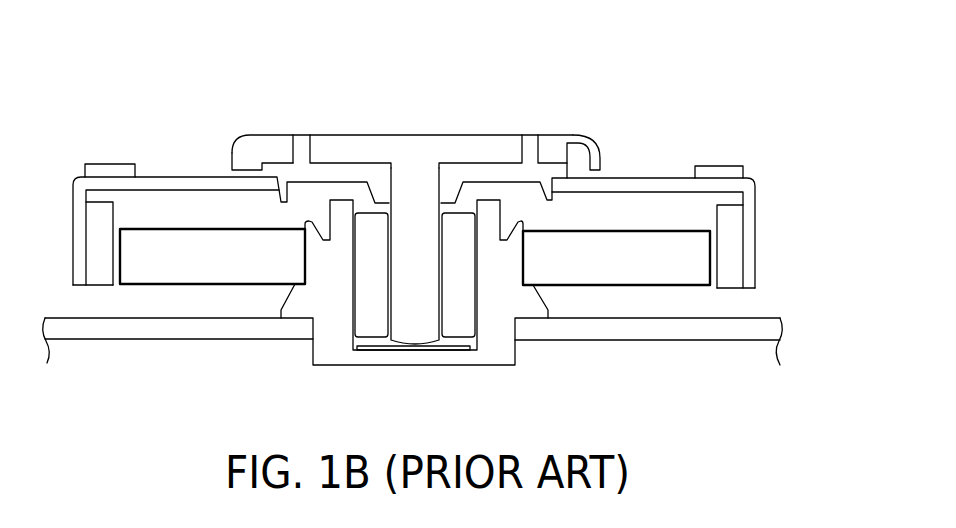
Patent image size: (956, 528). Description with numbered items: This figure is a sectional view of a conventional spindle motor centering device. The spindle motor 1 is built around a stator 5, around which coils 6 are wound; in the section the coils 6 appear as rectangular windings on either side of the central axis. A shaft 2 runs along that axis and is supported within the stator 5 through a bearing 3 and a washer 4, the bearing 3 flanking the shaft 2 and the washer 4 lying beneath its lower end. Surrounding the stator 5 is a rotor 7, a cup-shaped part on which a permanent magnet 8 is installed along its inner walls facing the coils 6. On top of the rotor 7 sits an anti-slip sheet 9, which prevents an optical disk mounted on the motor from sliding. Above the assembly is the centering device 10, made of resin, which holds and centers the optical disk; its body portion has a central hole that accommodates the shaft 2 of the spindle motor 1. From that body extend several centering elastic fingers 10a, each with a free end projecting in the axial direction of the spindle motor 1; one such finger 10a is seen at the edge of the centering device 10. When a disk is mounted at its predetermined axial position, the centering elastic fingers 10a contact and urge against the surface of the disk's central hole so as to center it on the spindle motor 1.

The spindle motor 1 is at (617, 79).
The shaft 2 is at (416, 167).
The bearing 3 is at (453, 337).
The washer 4 is at (400, 352).
The stator 5 is at (522, 307).
The coils 6 is at (623, 265).
The rotor 7 is at (757, 192).
The permanent magnet 8 is at (731, 242).
The anti-slip sheet 9 is at (721, 166).
The centering device 10 is at (533, 136).
The centering elastic fingers 10a is at (593, 141).